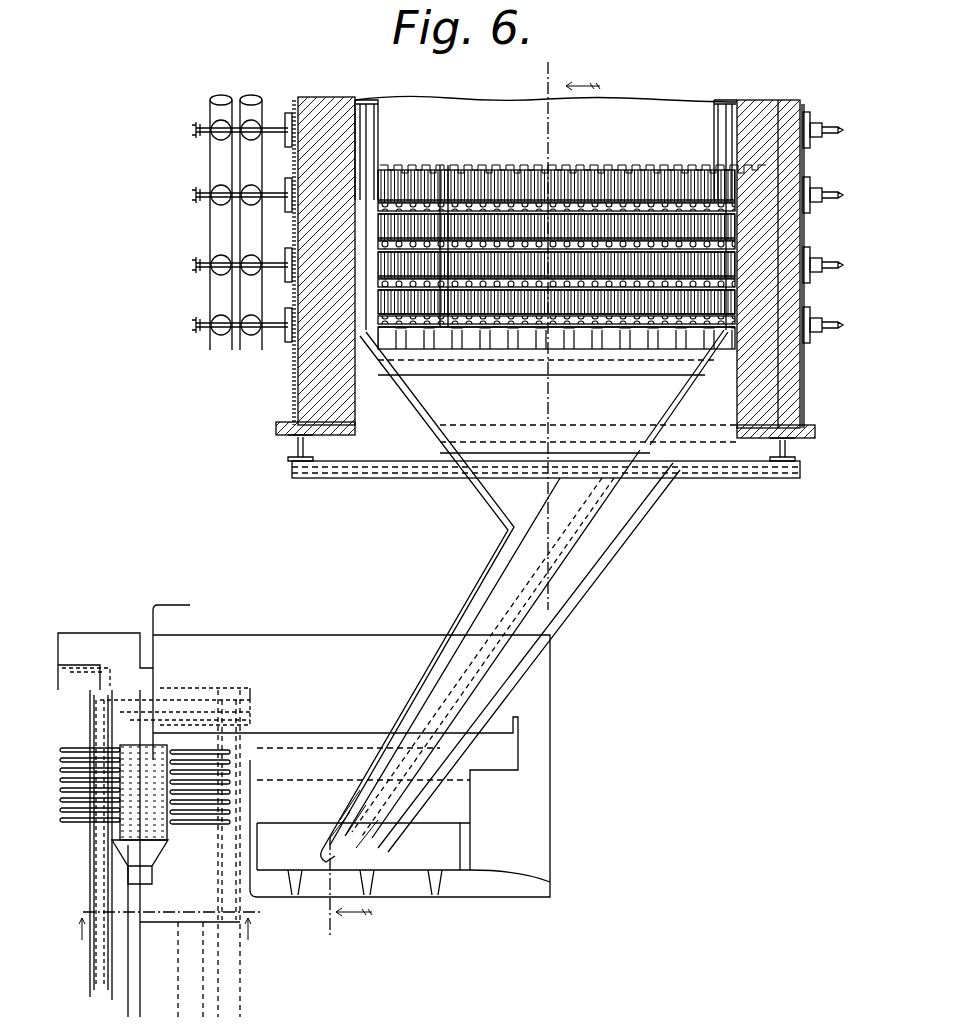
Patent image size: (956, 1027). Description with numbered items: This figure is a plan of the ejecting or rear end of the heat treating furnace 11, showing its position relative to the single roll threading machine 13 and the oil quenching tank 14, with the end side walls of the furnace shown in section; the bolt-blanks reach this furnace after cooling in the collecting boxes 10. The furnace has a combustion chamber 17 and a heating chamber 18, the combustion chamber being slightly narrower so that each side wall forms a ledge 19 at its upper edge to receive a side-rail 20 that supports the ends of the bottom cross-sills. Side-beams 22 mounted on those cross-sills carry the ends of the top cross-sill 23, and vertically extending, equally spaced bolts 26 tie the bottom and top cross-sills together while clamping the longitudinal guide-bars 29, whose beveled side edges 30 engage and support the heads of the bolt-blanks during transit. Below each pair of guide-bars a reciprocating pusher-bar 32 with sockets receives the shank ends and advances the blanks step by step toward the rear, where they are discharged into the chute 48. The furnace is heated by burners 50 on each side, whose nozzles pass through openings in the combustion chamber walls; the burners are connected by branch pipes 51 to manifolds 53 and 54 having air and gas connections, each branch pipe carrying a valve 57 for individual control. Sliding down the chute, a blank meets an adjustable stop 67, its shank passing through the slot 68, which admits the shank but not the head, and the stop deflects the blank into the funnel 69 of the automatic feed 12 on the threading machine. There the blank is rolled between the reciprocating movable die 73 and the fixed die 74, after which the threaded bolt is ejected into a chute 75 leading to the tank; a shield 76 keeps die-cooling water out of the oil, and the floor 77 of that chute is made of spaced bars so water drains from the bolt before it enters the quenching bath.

The collecting boxes 10 is at (456, 506).
The heat treating furnace 11 is at (766, 102).
The automatic feed 12 is at (392, 762).
The single roll threading machine 13 is at (455, 880).
The tank 14 is at (78, 692).
The combustion chamber 17 is at (618, 106).
The heating chamber 18 is at (360, 338).
The ledge 19 is at (363, 100).
The side-rails 20 is at (376, 122).
The side-beams 22 is at (376, 160).
The top cross-sill 23 is at (444, 243).
The bolts 26 is at (552, 208).
The guide-bars 29 is at (612, 176).
The beveled side edges 30 is at (540, 203).
The pusher-bar 32 is at (445, 176).
The chute 48 is at (440, 406).
The burners 50 is at (286, 270).
The branch pipes 51 is at (284, 205).
The manifold 53 is at (214, 345).
The manifold 54 is at (258, 348).
The valve 57 is at (205, 135).
The adjustable stop 67 is at (318, 846).
The slot 68 is at (450, 856).
The funnel 69 is at (358, 768).
The movable die 73 is at (445, 770).
The fixed die 74 is at (312, 780).
The chute 75 is at (232, 760).
The shield 76 is at (110, 730).
The floor 77 is at (222, 800).